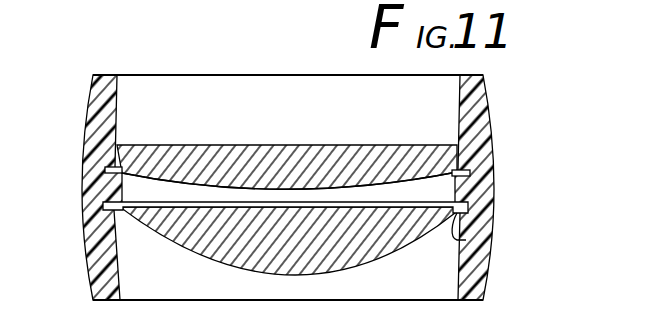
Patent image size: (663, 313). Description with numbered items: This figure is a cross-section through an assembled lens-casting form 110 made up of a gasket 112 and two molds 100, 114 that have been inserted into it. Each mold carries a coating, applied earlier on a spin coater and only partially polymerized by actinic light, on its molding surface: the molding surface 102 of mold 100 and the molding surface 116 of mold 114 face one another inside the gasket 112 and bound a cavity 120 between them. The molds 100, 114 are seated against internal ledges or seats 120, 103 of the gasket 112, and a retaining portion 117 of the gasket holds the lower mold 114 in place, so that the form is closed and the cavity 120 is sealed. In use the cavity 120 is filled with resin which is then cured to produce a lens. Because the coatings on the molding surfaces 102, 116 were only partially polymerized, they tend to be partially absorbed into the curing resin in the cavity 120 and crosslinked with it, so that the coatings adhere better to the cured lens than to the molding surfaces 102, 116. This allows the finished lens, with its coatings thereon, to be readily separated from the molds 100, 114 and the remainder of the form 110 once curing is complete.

The mold 100 is at (246, 135).
The molding surface 102 is at (372, 188).
The lens seat ledge 103 is at (468, 170).
The lens assembly 110 is at (526, 189).
The gasket 112 is at (488, 140).
The mold 114 is at (381, 273).
The molding surface 116 is at (276, 208).
The retaining ring 117 is at (490, 242).
The cavity 120 is at (132, 180).